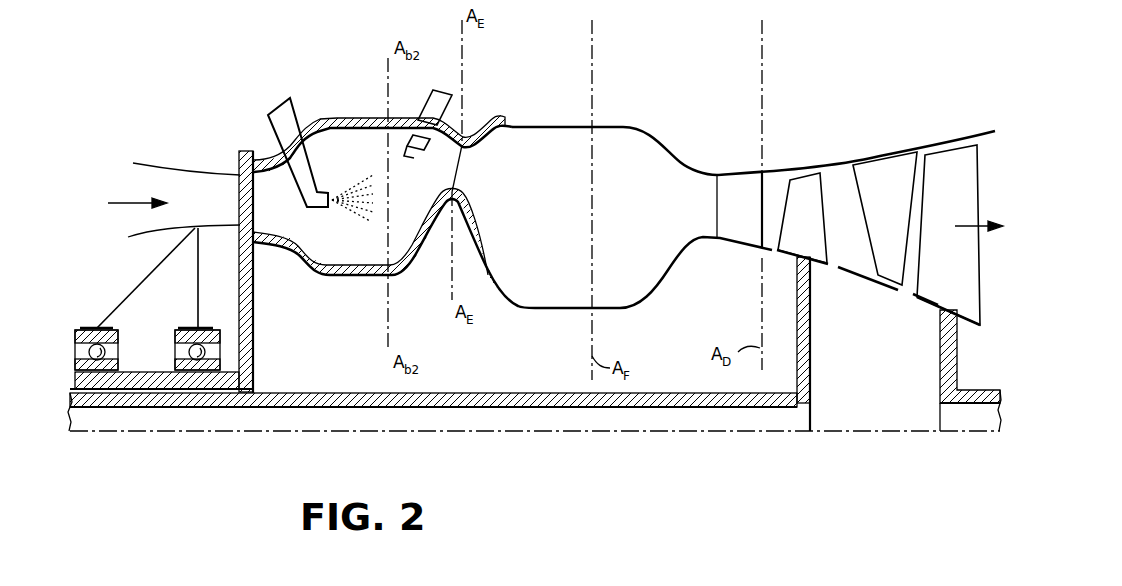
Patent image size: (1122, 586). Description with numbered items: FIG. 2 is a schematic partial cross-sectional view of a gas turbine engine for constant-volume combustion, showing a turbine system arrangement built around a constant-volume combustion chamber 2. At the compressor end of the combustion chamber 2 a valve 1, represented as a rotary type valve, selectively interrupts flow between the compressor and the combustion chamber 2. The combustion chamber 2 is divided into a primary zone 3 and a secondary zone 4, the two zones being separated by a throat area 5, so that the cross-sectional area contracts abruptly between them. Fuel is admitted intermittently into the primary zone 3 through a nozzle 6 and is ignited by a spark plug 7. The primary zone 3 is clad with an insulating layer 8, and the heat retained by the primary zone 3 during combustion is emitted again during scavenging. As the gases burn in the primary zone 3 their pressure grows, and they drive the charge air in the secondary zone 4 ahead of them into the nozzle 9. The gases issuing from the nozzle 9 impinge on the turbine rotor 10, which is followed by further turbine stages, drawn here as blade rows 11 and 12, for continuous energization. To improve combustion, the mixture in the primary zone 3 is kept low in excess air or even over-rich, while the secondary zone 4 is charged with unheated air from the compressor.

The valve 1 is at (239, 158).
The constant-volume combustion chamber 2 is at (405, 236).
The primary zone 3 is at (360, 147).
The secondary zone 4 is at (543, 153).
The throat area 5 is at (459, 167).
The nozzle 6 is at (300, 178).
The spark plug 7 is at (434, 103).
The insulating layer 8 is at (338, 118).
The nozzle 9 is at (733, 174).
The turbine rotor 10 is at (811, 226).
The turbine blade 11 is at (896, 226).
The guide vane 12 is at (963, 202).